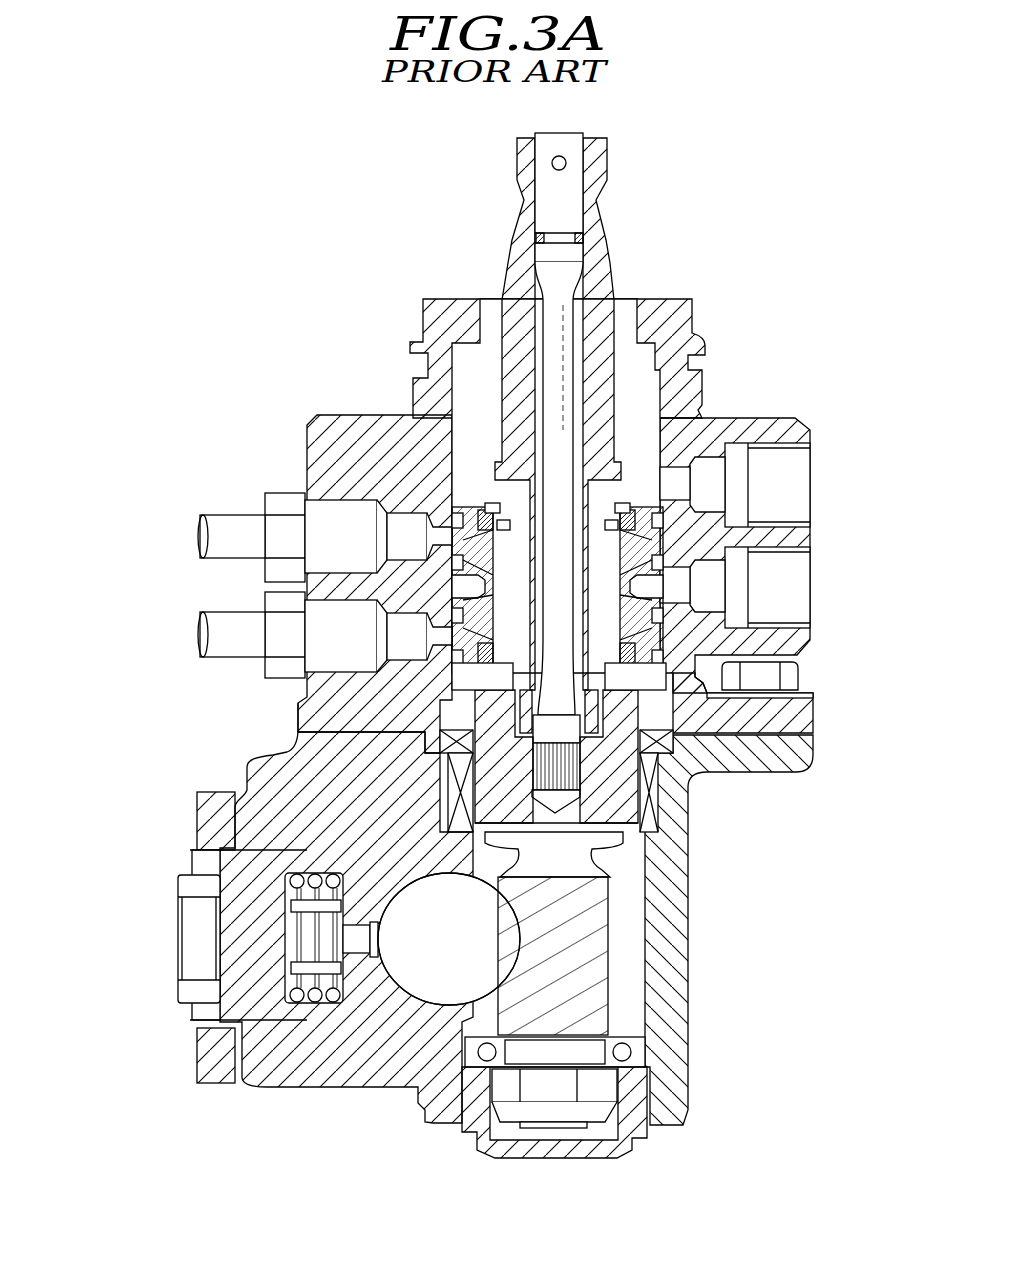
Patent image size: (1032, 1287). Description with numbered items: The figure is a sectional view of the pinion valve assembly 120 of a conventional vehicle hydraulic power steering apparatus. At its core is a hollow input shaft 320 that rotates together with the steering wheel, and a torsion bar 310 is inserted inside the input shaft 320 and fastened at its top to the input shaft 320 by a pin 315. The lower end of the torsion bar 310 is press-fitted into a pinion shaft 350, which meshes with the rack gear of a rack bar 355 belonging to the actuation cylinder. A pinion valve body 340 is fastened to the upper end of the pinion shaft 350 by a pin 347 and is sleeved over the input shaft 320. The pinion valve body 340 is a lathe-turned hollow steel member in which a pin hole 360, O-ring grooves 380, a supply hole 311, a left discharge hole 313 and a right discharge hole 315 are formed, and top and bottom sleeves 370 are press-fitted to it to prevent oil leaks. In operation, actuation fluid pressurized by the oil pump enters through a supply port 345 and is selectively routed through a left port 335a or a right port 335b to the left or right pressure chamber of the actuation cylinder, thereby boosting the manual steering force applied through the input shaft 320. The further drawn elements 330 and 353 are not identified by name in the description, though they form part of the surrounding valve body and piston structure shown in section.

The pinion valve assembly 120 is at (233, 305).
The torsion bar 310 is at (607, 267).
The supply hole 311 is at (445, 590).
The left discharge hole 313 is at (467, 508).
The pin 315 is at (553, 162).
The hollow input shaft 320 is at (598, 330).
The valve body 330 is at (732, 418).
The left port 335a is at (228, 527).
The right port 335b is at (218, 630).
The pinion valve body 340 is at (667, 647).
The supply port 345 is at (797, 600).
The pin 347 is at (425, 735).
The pinion shaft 350 is at (617, 822).
The piston 353 is at (600, 955).
The rack bar 355 is at (395, 985).
The pin hole 360 is at (473, 690).
The sleeves 370 is at (690, 515).
The O-ring grooves 380 is at (298, 732).